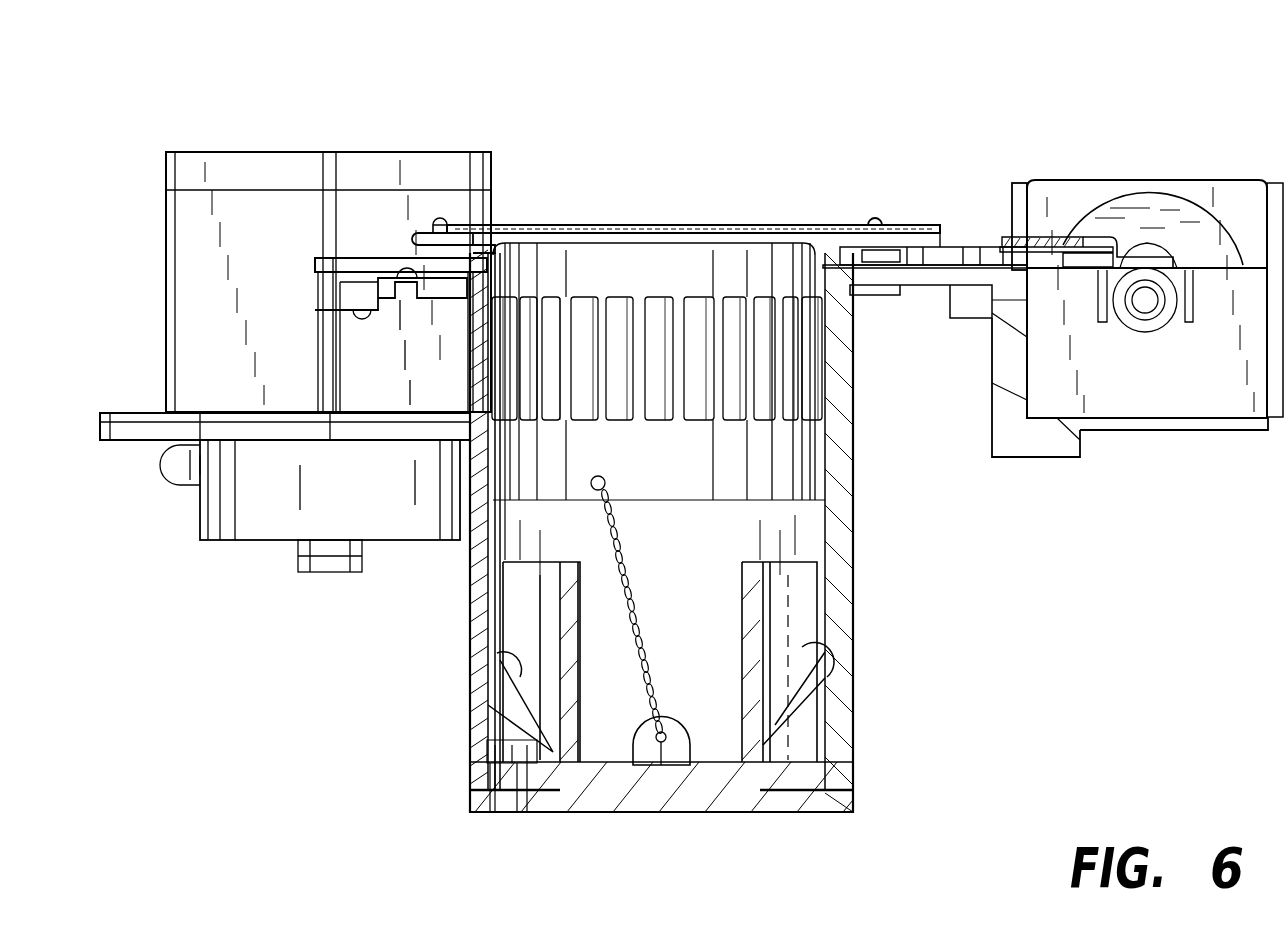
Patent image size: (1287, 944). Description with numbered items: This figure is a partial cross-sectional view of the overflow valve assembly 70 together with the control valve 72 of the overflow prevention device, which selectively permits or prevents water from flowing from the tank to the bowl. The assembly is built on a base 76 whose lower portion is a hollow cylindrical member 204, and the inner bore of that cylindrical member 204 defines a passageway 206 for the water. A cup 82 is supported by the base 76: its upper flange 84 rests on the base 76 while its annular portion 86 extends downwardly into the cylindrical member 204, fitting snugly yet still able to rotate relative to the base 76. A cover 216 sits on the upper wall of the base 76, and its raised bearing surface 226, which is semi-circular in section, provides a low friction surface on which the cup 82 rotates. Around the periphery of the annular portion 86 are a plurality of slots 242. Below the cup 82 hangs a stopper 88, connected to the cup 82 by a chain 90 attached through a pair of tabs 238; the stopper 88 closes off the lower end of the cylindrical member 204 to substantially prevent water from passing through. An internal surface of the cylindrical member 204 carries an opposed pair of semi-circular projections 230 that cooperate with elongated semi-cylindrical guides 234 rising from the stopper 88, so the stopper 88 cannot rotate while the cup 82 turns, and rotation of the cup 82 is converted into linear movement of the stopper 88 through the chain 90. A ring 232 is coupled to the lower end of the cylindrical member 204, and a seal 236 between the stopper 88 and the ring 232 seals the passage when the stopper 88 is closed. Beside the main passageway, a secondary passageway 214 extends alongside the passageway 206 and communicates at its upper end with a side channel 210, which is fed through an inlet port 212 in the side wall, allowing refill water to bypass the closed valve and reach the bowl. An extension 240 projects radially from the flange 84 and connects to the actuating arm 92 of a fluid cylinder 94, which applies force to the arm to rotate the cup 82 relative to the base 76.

The overflow valve assembly 70 is at (958, 450).
The control valve 72 is at (262, 118).
The base 76 is at (853, 395).
The cup 82 is at (862, 232).
The upper flange 84 is at (420, 239).
The annular portion 86 is at (820, 452).
The stopper 88 is at (855, 802).
The chain 90 is at (622, 542).
The actuating arm 92 is at (1040, 245).
The fluid cylinder 94 is at (1158, 432).
The cylindrical member 204 is at (853, 590).
The passageway 206 is at (830, 512).
The side channel 210 is at (420, 300).
The inlet port 212 is at (318, 286).
The secondary passageway 214 is at (470, 600).
The cover 216 is at (858, 270).
The bearing surface 226 is at (492, 225).
The semi-circular projections 230 is at (520, 688).
The ring 232 is at (855, 785).
The semi-cylindrical guides 234 is at (740, 630).
The seal 236 is at (855, 792).
The tabs 238 is at (680, 735).
The extension 240 is at (950, 236).
The slots 242 is at (620, 297).